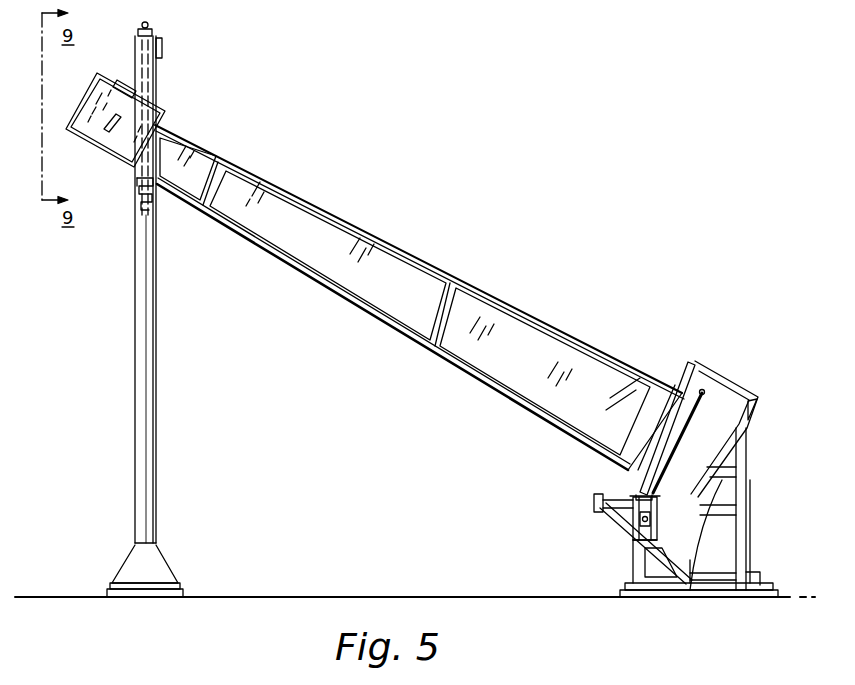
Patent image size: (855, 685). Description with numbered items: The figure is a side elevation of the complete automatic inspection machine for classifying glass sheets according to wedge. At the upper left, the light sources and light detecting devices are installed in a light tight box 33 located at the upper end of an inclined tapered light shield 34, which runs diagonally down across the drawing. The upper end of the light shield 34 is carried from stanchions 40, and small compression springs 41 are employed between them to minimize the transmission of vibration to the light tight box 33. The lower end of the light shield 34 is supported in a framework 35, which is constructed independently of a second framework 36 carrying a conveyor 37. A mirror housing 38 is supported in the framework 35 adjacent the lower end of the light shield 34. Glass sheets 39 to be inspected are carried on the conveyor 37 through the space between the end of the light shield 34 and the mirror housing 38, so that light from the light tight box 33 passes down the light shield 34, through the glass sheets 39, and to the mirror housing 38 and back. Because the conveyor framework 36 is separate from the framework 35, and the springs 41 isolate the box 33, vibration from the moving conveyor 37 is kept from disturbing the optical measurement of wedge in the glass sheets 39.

The light tight box 33 is at (120, 138).
The inclined tapered light shield 34 is at (405, 282).
The framework 35 is at (719, 388).
The second framework 36 is at (640, 560).
The conveyor 37 is at (632, 528).
The mirror housing 38 is at (712, 447).
The glass sheets 39 is at (684, 384).
The stanchions 40 is at (145, 302).
The small compression springs 41 is at (134, 197).